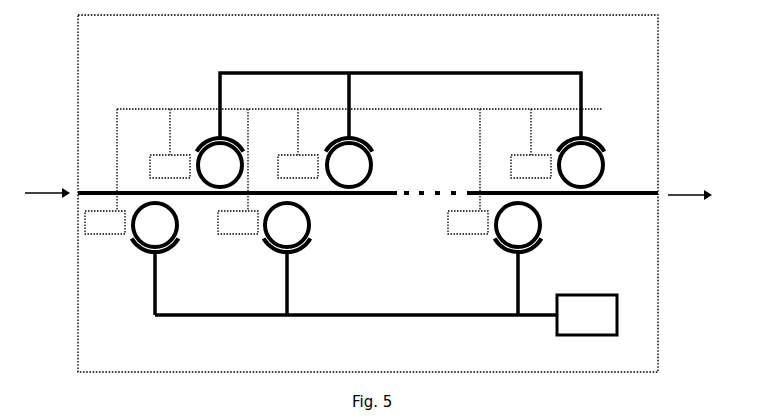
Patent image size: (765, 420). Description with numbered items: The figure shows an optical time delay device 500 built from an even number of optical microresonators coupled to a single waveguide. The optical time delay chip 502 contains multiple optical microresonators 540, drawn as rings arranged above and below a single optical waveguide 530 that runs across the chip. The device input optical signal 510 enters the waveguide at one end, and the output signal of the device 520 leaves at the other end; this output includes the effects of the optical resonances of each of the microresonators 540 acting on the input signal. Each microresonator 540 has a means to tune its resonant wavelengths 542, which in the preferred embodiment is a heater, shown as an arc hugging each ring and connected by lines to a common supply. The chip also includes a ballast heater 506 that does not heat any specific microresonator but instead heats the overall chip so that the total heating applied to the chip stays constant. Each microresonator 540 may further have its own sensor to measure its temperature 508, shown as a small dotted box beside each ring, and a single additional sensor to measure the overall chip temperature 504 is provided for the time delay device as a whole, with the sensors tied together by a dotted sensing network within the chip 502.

The optical time delay device 500 is at (35, 23).
The optical time delay chip 502 is at (368, 193).
The overall chip temperature sensor 504 is at (381, 153).
The ballast heater 506 is at (587, 315).
The microresonator temperature sensor 508 is at (318, 194).
The device input optical signal 510 is at (45, 170).
The output signal of the device 520 is at (688, 171).
The optical waveguide 530 is at (368, 206).
The optical microresonator 540 is at (368, 195).
The resonant wavelength tuning means 542 is at (368, 194).